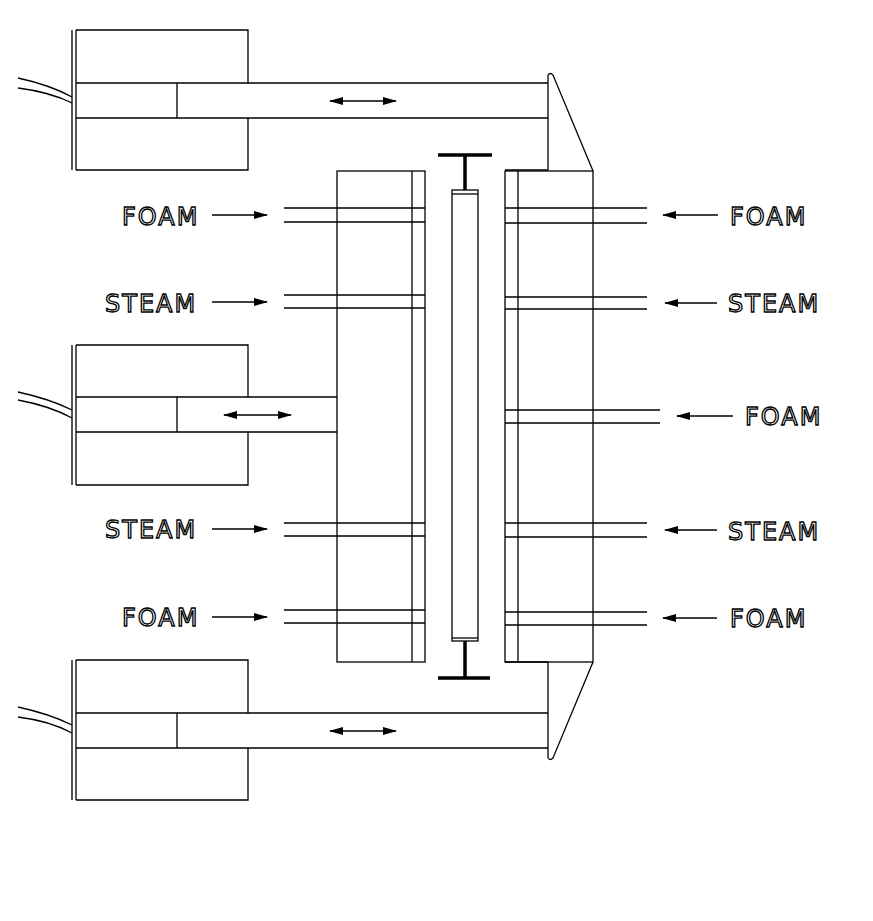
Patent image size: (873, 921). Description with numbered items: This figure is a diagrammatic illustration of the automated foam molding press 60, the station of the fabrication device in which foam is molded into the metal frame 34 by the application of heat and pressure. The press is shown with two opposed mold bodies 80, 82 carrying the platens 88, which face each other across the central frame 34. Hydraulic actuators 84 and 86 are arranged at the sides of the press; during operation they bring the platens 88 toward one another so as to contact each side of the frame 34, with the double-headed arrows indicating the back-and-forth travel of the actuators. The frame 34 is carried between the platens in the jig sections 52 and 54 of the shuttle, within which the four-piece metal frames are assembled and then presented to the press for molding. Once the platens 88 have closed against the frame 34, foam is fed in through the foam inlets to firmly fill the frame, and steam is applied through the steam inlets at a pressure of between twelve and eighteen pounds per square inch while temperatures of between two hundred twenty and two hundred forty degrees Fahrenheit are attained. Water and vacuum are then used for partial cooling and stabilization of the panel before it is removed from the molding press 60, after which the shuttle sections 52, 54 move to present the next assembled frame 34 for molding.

The molding press 60 is at (642, 172).
The mold half 80 is at (575, 187).
The mold half 82 is at (420, 177).
The platens 88 is at (513, 185).
The hydraulic actuator 84 is at (223, 42).
The hydraulic actuator 86 is at (113, 360).
The jig section 52 is at (457, 187).
The jig section 54 is at (458, 643).
The metal frame 34 is at (470, 620).